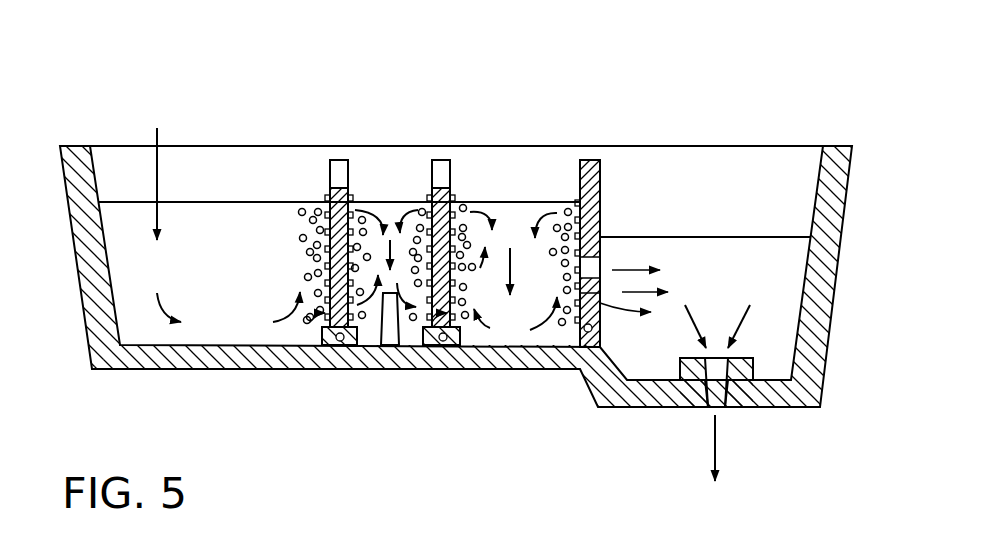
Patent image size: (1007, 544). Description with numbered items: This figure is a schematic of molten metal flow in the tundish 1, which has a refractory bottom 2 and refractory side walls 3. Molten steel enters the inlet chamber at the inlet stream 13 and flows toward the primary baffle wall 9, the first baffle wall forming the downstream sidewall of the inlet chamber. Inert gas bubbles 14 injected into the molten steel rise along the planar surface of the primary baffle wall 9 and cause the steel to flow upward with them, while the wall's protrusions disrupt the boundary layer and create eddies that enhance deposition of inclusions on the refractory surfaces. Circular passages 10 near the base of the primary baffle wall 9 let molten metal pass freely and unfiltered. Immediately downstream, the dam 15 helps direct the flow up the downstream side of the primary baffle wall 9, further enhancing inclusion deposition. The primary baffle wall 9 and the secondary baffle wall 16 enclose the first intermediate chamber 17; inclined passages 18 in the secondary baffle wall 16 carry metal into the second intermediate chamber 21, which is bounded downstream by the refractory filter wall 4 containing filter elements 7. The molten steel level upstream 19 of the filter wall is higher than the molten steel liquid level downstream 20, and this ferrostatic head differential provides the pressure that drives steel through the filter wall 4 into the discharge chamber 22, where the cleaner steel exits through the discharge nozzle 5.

The tundish 1 is at (620, 120).
The refractory bottom 2 is at (163, 362).
The refractory side walls 3 is at (90, 298).
The refractory filter wall 4 is at (597, 218).
The discharge nozzle 5 is at (720, 395).
The filter elements 7 is at (600, 303).
The primary baffle wall 9 is at (330, 267).
The circular passages 10 is at (310, 322).
The inlet stream 13 is at (157, 157).
The inert gas bubbles 14 is at (303, 240).
The dam 15 is at (387, 327).
The secondary baffle wall 16 is at (428, 197).
The first intermediate chamber 17 is at (378, 230).
The passages 18 is at (447, 317).
The molten steel level upstream 19 is at (517, 200).
The molten steel liquid level downstream 20 is at (662, 237).
The second intermediate chamber 21 is at (508, 225).
The discharge chamber 22 is at (720, 260).